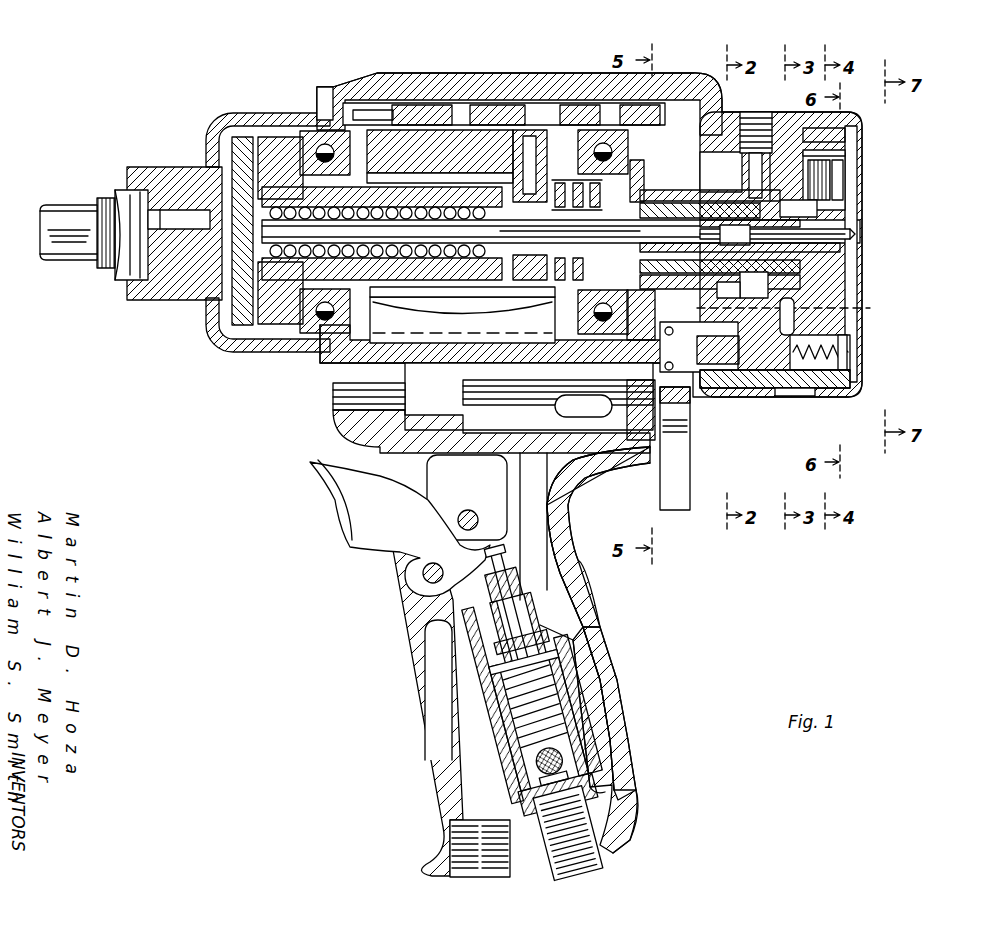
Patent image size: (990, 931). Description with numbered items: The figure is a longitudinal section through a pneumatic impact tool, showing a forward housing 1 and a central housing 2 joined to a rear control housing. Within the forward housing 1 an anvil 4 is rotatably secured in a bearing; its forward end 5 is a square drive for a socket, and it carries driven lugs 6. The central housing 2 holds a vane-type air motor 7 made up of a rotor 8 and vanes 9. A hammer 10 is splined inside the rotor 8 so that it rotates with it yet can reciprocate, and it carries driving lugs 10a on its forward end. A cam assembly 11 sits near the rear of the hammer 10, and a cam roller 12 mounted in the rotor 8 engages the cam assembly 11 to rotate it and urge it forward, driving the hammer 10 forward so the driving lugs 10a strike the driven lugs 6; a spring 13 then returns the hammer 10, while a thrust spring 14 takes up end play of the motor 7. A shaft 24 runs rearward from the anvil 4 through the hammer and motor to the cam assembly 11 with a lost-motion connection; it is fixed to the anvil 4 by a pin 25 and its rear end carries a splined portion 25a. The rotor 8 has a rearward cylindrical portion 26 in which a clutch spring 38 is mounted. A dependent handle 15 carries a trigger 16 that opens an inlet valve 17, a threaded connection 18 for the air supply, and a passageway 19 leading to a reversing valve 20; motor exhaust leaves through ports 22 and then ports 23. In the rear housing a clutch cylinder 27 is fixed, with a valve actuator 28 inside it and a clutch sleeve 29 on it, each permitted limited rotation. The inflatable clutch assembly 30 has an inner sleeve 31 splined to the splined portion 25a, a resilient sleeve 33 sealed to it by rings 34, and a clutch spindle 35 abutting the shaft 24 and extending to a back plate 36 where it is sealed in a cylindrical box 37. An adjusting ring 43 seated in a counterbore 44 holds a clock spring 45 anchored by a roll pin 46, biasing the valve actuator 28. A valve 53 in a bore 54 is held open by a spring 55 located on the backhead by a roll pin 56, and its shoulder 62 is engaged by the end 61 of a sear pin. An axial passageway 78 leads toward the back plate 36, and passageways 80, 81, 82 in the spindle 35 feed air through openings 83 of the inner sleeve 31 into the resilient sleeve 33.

The forward housing 1 is at (232, 114).
The central housing 2 is at (480, 72).
The anvil 4 is at (152, 185).
The forward end 5 is at (40, 205).
The driven lugs 6 is at (244, 132).
The air motor 7 is at (405, 316).
The rotor 8 is at (412, 132).
The vanes 9 is at (468, 318).
The hammer 10 is at (262, 353).
The driving lugs 10a is at (273, 134).
The cam assembly 11 is at (528, 278).
The cam roller 12 is at (520, 130).
The spring 13 is at (268, 208).
The thrust spring 14 is at (580, 183).
The handle 15 is at (622, 676).
The trigger 16 is at (316, 514).
The inlet valve 17 is at (500, 712).
The threaded connection 18 is at (625, 853).
The passageway 19 is at (552, 466).
The reversing valve 20 is at (692, 442).
The ports 22 is at (456, 365).
The ports 23 is at (332, 393).
The shaft 24 is at (184, 260).
The pin 25 is at (176, 210).
The splined portion 25a is at (494, 234).
The cylindrical portion 26 is at (642, 315).
The clutch cylinder 27 is at (772, 165).
The valve actuator 28 is at (840, 208).
The clutch sleeve 29 is at (732, 170).
The inflatable clutch assembly 30 is at (907, 254).
The inner sleeve 31 is at (742, 285).
The resilient sleeve 33 is at (798, 208).
The rings 34 is at (803, 195).
The clutch spindle 35 is at (840, 222).
The back plate 36 is at (830, 156).
The cylindrical box 37 is at (846, 264).
The clutch spring 38 is at (634, 170).
The adjusting ring 43 is at (835, 178).
The counterbore 44 is at (836, 140).
The clock spring 45 is at (840, 192).
The roll pin 46 is at (846, 278).
The valve 53 is at (740, 352).
The bore 54 is at (850, 372).
The spring 55 is at (856, 355).
The roll pin 56 is at (850, 345).
The end 61 is at (852, 322).
The shoulder 62 is at (795, 392).
The passageway 78 is at (797, 315).
The passageway 80 is at (848, 250).
The passageway 81 is at (848, 238).
The passageway 82 is at (705, 228).
The openings 83 is at (716, 222).